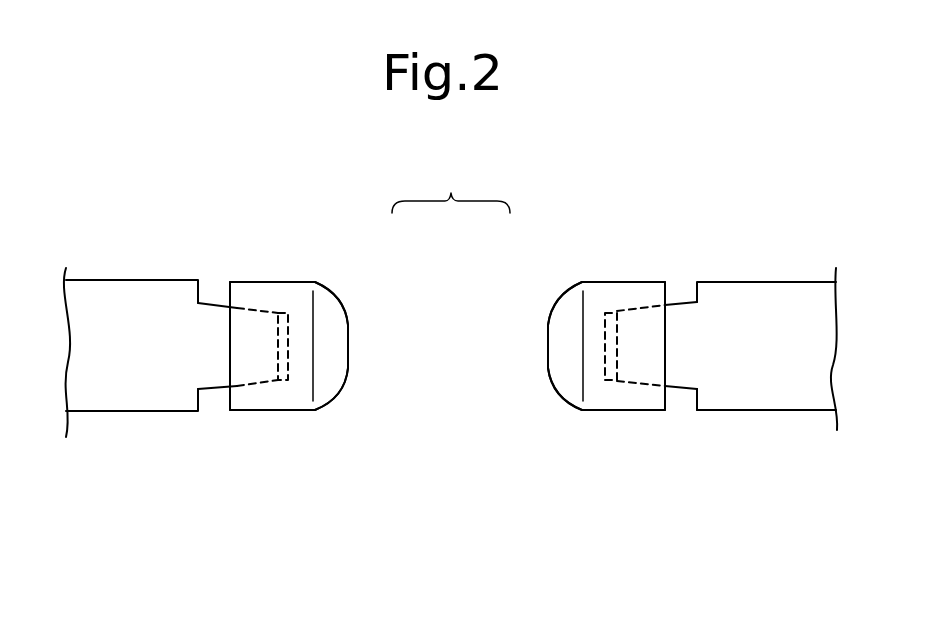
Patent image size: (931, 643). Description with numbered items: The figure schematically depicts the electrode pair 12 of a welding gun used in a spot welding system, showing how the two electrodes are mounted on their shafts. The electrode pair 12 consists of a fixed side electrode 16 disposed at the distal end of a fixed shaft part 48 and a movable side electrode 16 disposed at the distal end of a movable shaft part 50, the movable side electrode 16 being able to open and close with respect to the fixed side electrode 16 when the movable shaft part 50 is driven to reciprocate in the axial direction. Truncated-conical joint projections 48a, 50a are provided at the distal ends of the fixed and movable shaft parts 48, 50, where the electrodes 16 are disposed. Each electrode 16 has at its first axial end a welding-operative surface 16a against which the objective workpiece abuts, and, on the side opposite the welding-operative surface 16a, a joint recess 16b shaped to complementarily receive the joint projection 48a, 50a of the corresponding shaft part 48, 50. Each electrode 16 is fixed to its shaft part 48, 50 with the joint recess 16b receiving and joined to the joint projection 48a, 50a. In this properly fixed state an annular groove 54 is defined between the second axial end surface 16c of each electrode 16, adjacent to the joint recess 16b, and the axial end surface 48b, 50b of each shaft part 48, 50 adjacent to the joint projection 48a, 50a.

The electrode pair 12 is at (451, 189).
The electrode 16 is at (313, 278).
The welding-operative surface 16a is at (348, 350).
The joint recess 16b is at (608, 367).
The second axial end surface 16c is at (233, 290).
The fixed shaft part 48 is at (781, 307).
The joint projection 48a is at (643, 368).
The axial end surface 48b is at (690, 398).
The movable shaft part 50 is at (128, 389).
The joint projection 50a is at (217, 323).
The axial end surface 50b is at (196, 290).
The annular groove 54 is at (213, 395).